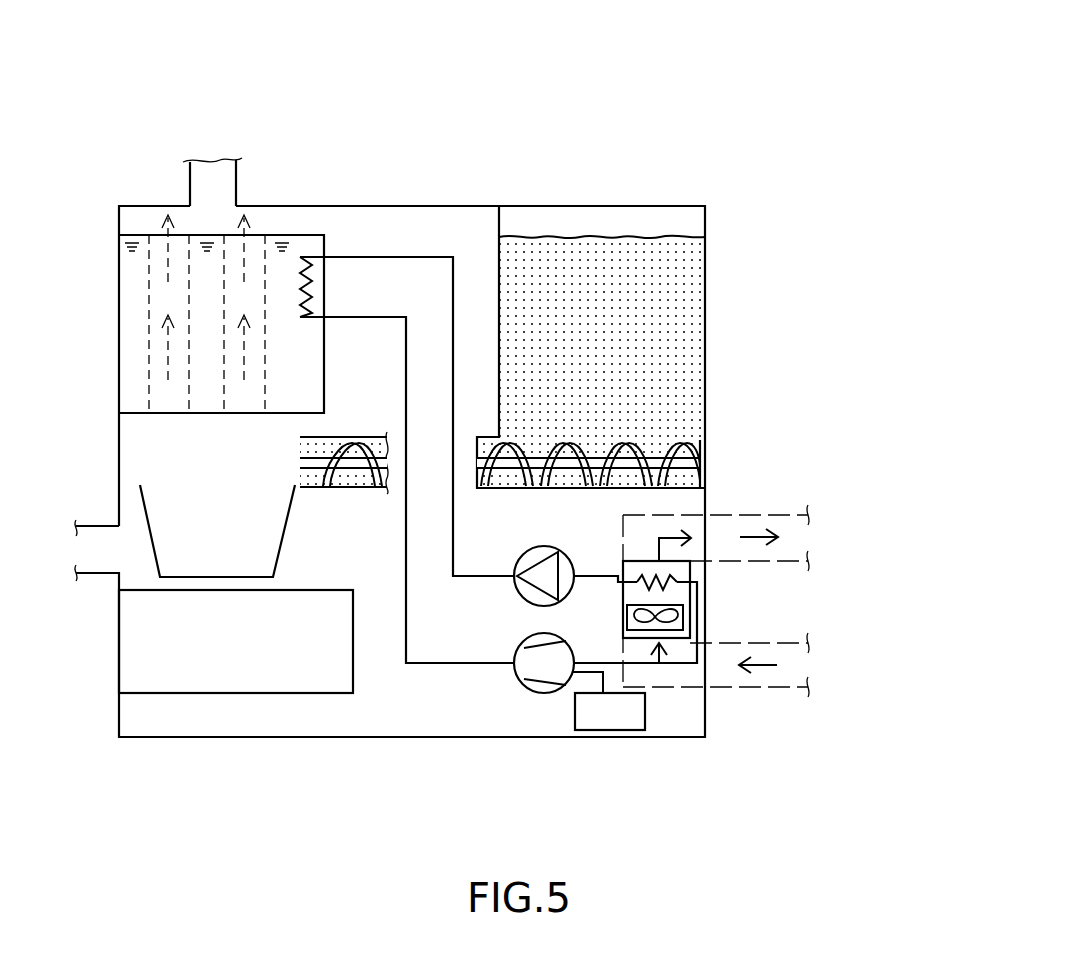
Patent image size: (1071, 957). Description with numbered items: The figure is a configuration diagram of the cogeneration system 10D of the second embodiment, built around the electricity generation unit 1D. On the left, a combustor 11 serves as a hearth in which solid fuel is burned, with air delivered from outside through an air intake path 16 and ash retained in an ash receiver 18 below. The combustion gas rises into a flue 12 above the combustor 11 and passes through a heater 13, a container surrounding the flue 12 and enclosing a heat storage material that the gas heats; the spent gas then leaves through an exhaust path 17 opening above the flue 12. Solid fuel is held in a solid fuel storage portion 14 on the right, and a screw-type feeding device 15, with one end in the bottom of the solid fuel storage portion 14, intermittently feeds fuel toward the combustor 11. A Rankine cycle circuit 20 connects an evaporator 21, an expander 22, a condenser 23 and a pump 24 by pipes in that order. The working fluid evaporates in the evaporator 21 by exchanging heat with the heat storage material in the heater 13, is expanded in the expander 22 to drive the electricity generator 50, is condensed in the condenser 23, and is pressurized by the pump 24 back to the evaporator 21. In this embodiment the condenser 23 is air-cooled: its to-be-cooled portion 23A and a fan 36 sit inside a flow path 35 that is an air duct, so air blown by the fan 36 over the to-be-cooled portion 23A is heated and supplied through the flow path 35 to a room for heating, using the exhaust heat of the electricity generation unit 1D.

The cogeneration system 10D is at (758, 125).
The electricity generation unit 1D is at (650, 205).
The combustor 11 is at (282, 545).
The flue 12 is at (150, 385).
The heater 13 is at (207, 413).
The solid fuel storage portion 14 is at (685, 318).
The feeding device 15 is at (368, 465).
The air intake path 16 is at (97, 573).
The exhaust path 17 is at (236, 180).
The ash receiver 18 is at (236, 668).
The Rankine cycle circuit 20 is at (432, 667).
The evaporator 21 is at (312, 287).
The expander 22 is at (532, 693).
The condenser 23 is at (622, 615).
The to-be-cooled portion 23A is at (658, 572).
The pump 24 is at (556, 548).
The flow path 35 is at (752, 690).
The fan 36 is at (680, 626).
The electricity generator 50 is at (611, 730).